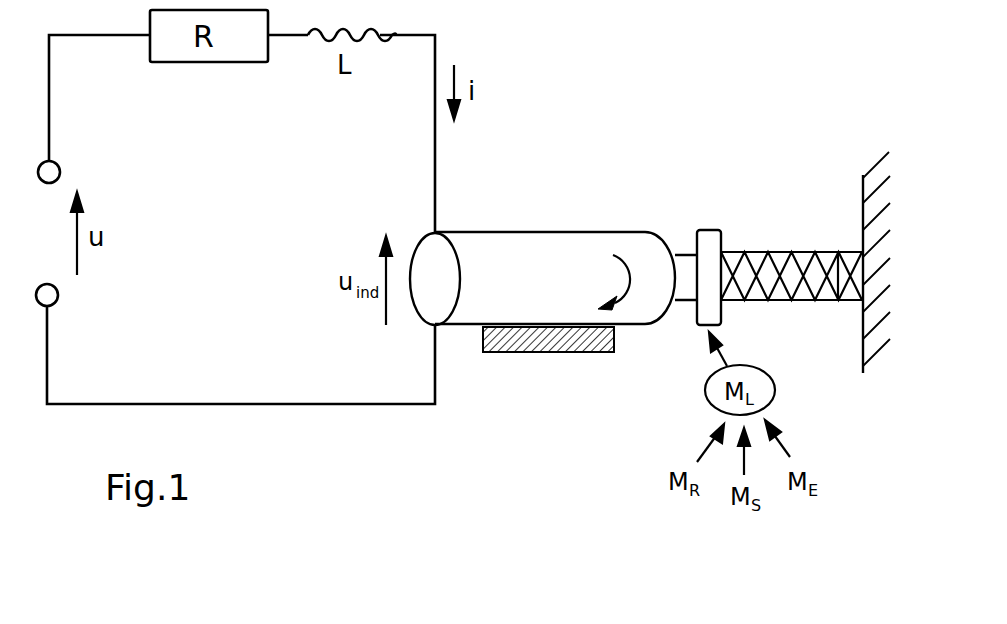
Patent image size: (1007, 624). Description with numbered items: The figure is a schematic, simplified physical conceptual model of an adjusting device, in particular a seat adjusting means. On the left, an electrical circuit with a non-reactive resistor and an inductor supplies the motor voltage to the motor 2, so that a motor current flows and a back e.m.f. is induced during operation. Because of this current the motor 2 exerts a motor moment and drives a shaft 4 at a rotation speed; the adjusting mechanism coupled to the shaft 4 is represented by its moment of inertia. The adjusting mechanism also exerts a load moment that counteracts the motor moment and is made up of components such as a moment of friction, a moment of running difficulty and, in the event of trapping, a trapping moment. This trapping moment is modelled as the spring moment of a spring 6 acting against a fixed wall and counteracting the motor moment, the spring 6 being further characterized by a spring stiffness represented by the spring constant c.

The motor 2 is at (465, 232).
The shaft 4 is at (684, 256).
The spring 6 is at (791, 278).
The spring constant c is at (790, 249).